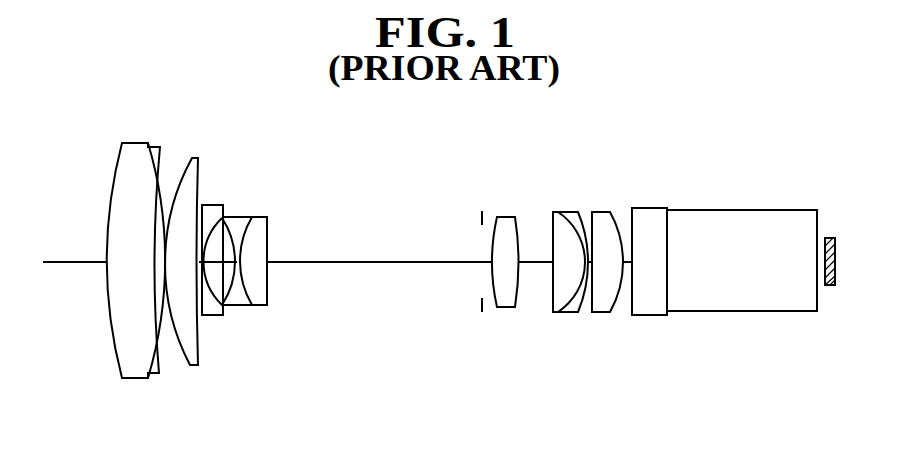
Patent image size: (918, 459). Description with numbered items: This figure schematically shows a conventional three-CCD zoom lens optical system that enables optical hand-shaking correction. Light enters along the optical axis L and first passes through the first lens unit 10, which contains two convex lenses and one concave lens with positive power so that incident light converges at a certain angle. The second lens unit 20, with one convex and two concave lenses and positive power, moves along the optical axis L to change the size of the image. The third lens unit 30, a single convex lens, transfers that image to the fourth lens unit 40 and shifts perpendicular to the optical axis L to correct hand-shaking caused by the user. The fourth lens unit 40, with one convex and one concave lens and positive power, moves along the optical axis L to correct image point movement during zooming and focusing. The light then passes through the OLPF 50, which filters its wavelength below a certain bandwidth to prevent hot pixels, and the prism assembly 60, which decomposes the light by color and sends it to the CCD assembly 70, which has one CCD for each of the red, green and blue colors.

The optical axis L is at (68, 262).
The first lens unit 10 is at (123, 384).
The second lens unit 20 is at (205, 384).
The third lens unit 30 is at (503, 308).
The fourth lens unit 40 is at (553, 323).
The OLPF (optical low pass filter) 50 is at (647, 310).
The prism assembly 60 is at (740, 305).
The CCD assembly 70 is at (830, 287).